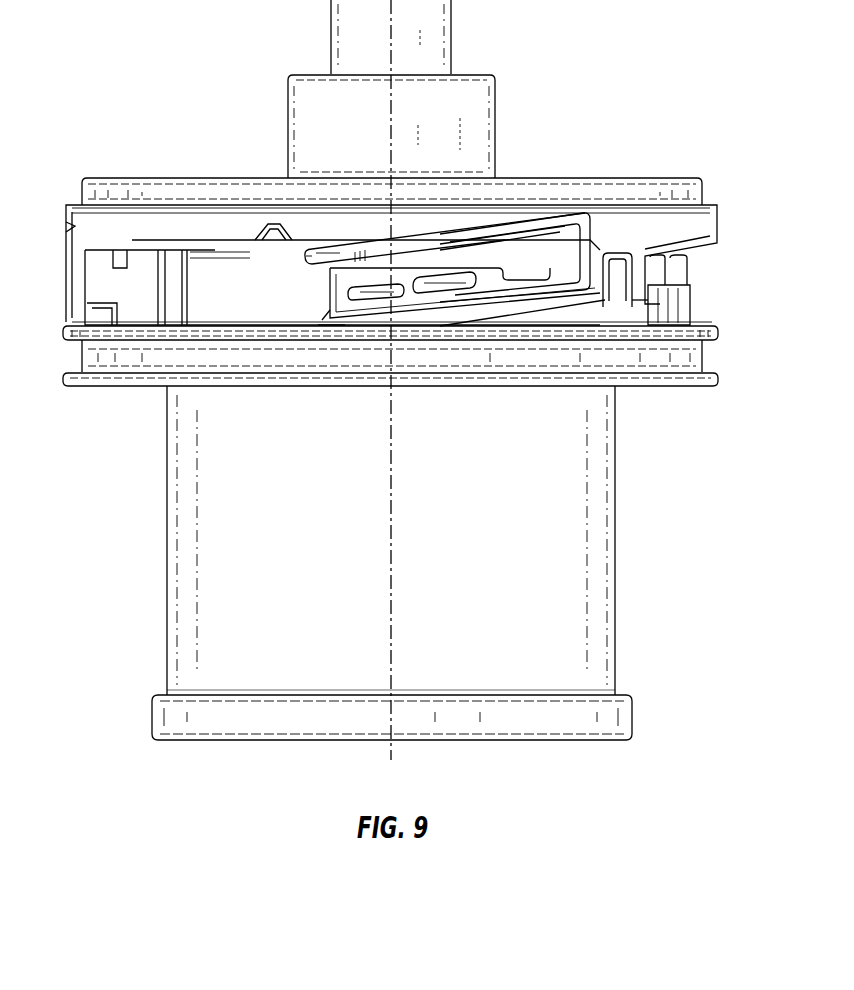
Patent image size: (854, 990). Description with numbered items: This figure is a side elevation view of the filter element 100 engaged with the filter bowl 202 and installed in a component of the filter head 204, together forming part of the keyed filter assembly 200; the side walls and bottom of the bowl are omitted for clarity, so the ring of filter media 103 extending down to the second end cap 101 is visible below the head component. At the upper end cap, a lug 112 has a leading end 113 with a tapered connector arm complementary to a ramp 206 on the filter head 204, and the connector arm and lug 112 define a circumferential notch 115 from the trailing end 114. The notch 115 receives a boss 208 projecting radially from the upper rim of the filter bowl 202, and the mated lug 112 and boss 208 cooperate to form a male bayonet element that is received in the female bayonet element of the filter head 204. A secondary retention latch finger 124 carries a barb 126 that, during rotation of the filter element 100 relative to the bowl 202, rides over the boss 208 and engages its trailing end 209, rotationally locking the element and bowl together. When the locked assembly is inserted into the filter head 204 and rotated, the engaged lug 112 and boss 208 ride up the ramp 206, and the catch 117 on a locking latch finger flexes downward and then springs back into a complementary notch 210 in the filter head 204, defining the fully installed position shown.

The filter element 100 is at (643, 554).
The second end cap 101 is at (607, 717).
The filter media 103 is at (482, 547).
The lug 112 is at (545, 289).
The leading end 113 is at (548, 258).
The trailing end 114 is at (378, 252).
The circumferential notch 115 is at (494, 264).
The catch 117 is at (251, 252).
The secondary retention latch finger 124 is at (308, 260).
The barb 126 is at (332, 272).
The keyed filter assembly 200 is at (147, 131).
The filter bowl 202 is at (711, 343).
The filter head 204 is at (497, 122).
The ramp 206 is at (520, 305).
The boss 208 is at (412, 298).
The trailing end 209 is at (340, 308).
The notch 210 is at (268, 230).